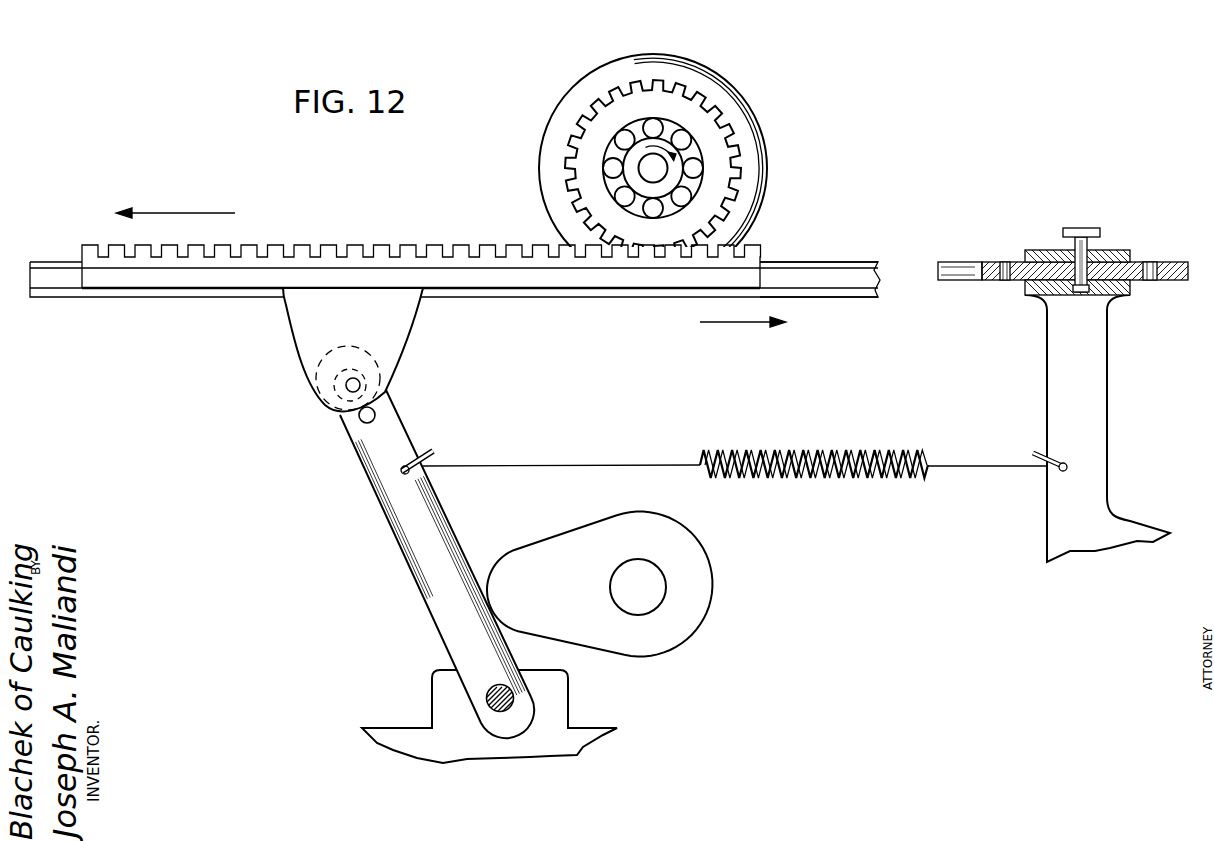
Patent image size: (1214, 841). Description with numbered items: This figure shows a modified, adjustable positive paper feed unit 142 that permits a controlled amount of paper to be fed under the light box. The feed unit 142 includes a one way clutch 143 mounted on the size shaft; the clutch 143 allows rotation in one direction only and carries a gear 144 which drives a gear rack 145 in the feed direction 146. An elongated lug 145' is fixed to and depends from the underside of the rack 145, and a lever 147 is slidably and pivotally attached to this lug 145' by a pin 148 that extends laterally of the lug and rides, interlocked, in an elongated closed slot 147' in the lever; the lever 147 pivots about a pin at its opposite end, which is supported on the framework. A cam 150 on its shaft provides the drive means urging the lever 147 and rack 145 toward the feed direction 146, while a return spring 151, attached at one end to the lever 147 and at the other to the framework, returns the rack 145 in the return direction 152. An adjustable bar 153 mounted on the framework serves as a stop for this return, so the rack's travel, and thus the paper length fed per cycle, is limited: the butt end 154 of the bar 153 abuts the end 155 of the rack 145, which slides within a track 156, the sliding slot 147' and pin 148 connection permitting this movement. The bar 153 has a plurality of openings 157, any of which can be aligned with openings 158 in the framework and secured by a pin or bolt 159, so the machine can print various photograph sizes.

The paper feed unit 142 is at (347, 553).
The one way clutch 143 is at (757, 122).
The gear 144 is at (735, 215).
The gear rack 145 is at (421, 230).
The elongated lug 145' is at (377, 349).
The feed direction 146 is at (163, 213).
The lever 147 is at (465, 546).
The elongated closed slot 147' is at (322, 436).
The pin 148 is at (350, 385).
The cam 150 is at (547, 537).
The return spring 151 is at (825, 414).
The return direction 152 is at (730, 322).
The adjustable bar 153 is at (970, 262).
The butt end 154 is at (940, 272).
The end 155 is at (763, 277).
The track 156 is at (847, 277).
The openings 157 is at (1150, 262).
The openings 158 is at (1043, 250).
The pin or bolt 159 is at (1093, 228).